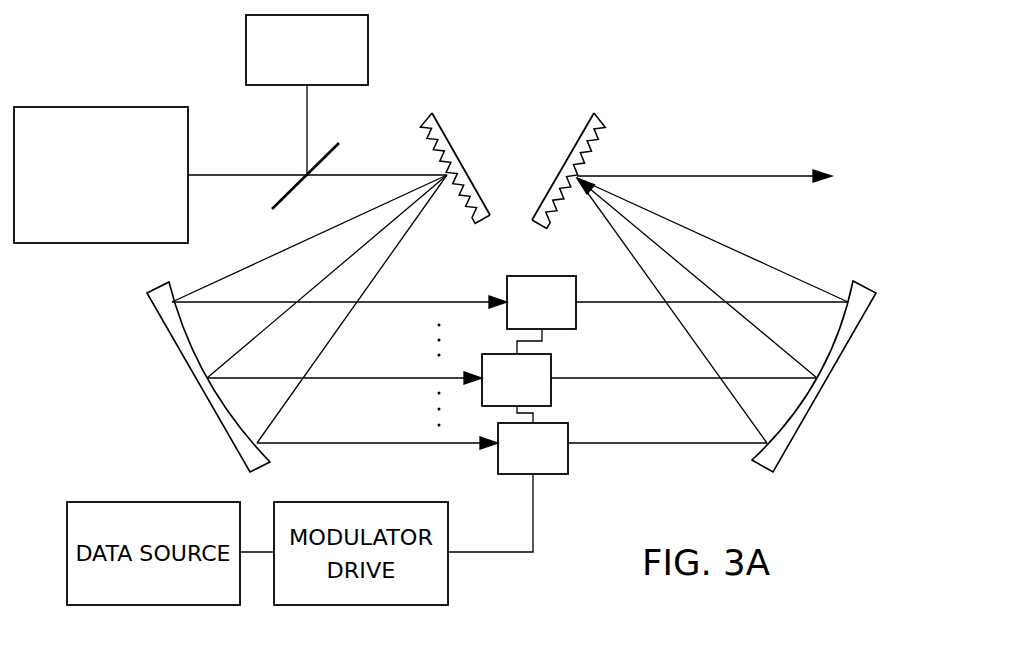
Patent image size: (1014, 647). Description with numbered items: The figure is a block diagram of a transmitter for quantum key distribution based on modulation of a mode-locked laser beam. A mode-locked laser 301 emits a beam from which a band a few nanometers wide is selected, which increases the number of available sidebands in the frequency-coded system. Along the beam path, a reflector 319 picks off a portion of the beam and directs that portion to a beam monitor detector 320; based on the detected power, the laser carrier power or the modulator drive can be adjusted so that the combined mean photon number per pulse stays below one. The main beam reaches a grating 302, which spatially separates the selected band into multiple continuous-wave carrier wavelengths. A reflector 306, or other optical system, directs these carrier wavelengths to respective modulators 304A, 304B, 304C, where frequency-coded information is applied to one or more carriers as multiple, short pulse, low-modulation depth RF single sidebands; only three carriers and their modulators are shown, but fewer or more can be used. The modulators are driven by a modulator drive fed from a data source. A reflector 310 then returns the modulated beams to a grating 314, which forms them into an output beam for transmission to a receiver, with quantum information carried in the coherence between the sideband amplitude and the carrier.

The mode-locked laser 301 is at (101, 175).
The beam monitor detector 320 is at (307, 95).
The reflector 319 is at (338, 157).
The grating 302 is at (437, 112).
The reflector 306 is at (182, 357).
The modulator 304A is at (570, 320).
The modulator 304B is at (552, 399).
The modulator 304C is at (570, 469).
The reflector 310 is at (857, 327).
The grating 314 is at (575, 143).